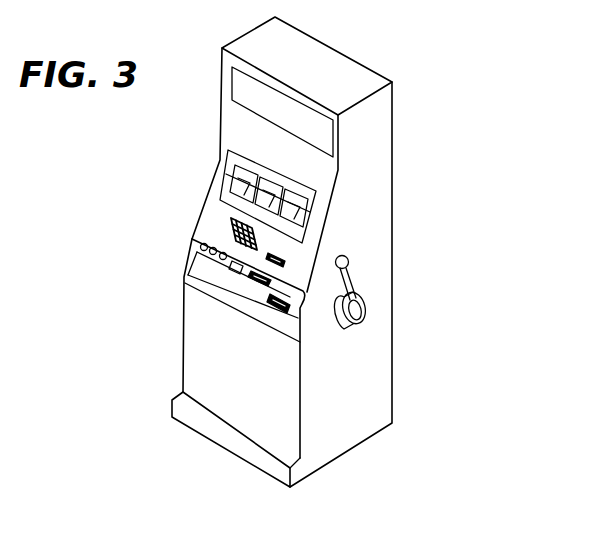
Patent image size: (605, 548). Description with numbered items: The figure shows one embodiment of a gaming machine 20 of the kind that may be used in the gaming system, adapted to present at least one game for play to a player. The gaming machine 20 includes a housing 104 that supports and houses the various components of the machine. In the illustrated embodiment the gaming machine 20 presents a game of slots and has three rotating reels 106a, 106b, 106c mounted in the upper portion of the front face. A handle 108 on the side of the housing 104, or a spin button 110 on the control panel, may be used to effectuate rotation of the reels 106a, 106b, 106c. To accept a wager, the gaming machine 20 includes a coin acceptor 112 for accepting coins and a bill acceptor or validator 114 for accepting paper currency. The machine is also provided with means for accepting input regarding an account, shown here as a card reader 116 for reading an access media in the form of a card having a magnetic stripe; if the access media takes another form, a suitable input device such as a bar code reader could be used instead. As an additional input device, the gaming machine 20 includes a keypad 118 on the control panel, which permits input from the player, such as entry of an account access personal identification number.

The gaming machine 20 is at (381, 252).
The housing 104 is at (375, 350).
The rotating reel 106a is at (237, 168).
The rotating reel 106b is at (263, 176).
The rotating reel 106c is at (292, 192).
The handle 108 is at (350, 272).
The spin button 110 is at (252, 276).
The coin acceptor 112 is at (225, 303).
The bill acceptor or validator 114 is at (303, 323).
The card reader 116 is at (283, 258).
The keypad 118 is at (232, 235).